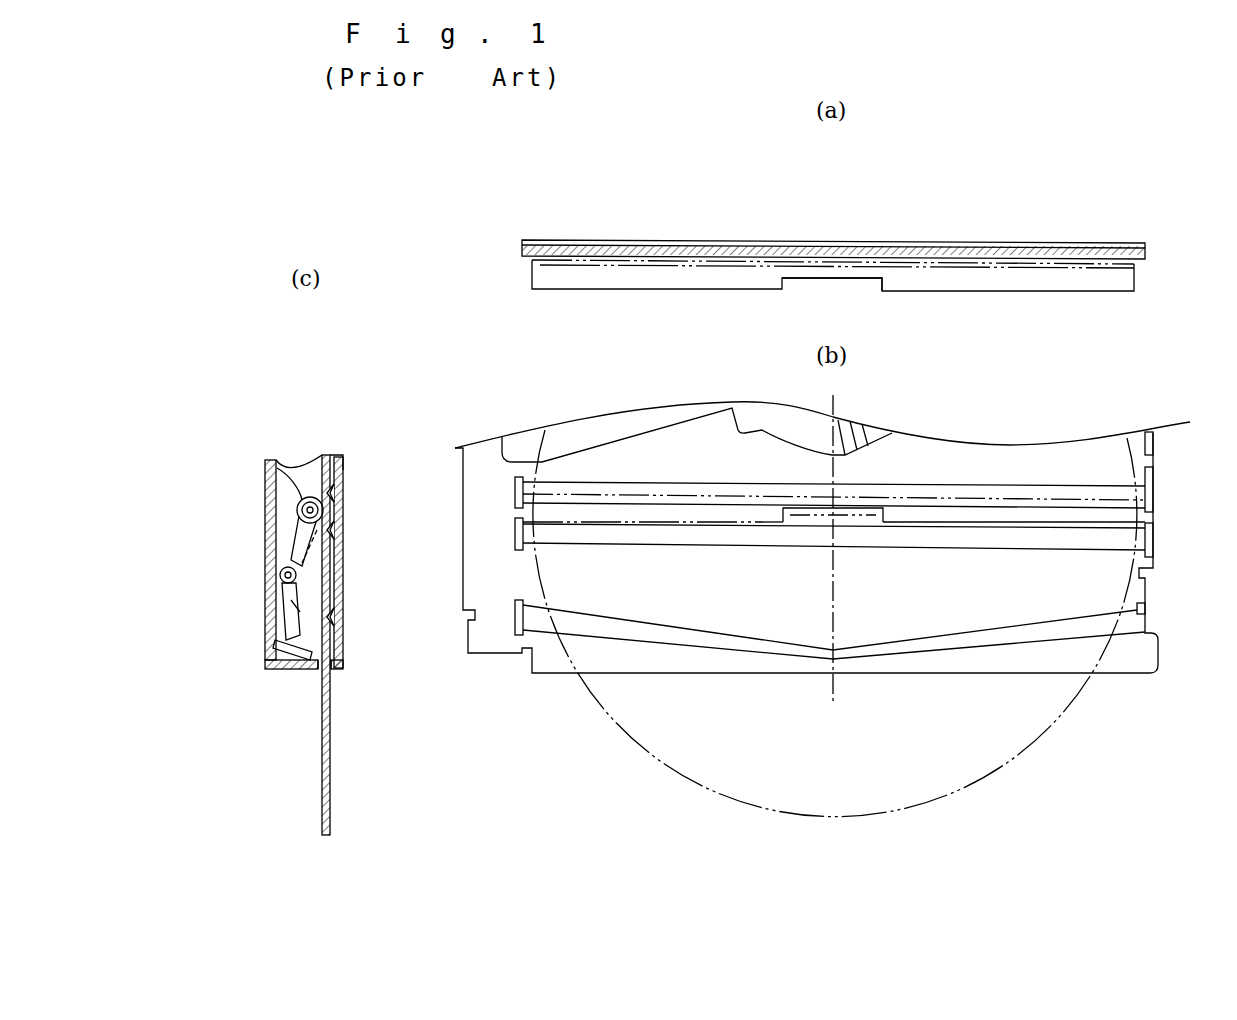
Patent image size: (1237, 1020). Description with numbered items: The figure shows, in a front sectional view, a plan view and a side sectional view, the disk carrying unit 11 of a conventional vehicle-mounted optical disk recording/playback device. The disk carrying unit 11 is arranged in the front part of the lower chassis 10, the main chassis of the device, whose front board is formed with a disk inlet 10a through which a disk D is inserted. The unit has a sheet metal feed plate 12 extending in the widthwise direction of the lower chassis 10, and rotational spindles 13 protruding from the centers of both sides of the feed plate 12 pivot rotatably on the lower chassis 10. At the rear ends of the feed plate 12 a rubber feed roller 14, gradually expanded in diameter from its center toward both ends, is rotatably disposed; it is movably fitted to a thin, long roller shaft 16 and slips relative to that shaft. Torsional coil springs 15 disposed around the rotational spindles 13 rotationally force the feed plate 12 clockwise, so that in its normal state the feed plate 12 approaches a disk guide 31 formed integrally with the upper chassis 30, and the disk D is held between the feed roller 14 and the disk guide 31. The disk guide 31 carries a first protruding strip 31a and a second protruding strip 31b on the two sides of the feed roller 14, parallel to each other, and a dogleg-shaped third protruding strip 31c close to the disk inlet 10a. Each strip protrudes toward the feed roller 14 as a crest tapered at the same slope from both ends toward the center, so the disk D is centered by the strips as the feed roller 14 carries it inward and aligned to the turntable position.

The disk D is at (808, 250).
The lower chassis 10 is at (266, 660).
The disk inlet 10a is at (335, 670).
The disk carrying unit 11 is at (303, 428).
The feed plate 12 is at (275, 552).
The rotational spindles 13 is at (290, 598).
The feed roller 14 is at (1120, 283).
The torsional coil springs 15 is at (290, 528).
The roller shaft 16 is at (845, 290).
The upper chassis 30 is at (335, 470).
The disk guide 31 is at (349, 571).
The first protruding strip 31a is at (966, 245).
The second protruding strip 31b is at (343, 538).
The third protruding strip 31c is at (347, 620).